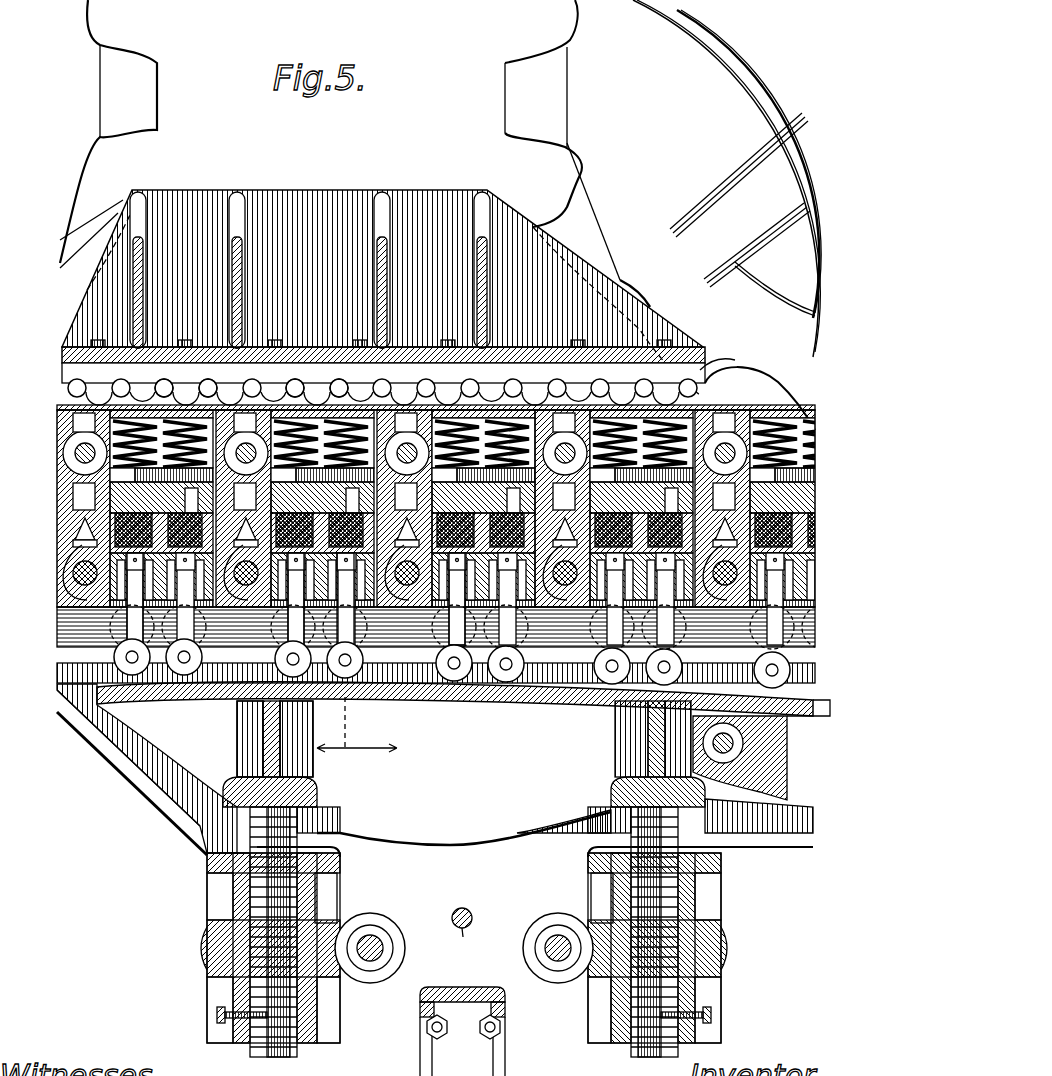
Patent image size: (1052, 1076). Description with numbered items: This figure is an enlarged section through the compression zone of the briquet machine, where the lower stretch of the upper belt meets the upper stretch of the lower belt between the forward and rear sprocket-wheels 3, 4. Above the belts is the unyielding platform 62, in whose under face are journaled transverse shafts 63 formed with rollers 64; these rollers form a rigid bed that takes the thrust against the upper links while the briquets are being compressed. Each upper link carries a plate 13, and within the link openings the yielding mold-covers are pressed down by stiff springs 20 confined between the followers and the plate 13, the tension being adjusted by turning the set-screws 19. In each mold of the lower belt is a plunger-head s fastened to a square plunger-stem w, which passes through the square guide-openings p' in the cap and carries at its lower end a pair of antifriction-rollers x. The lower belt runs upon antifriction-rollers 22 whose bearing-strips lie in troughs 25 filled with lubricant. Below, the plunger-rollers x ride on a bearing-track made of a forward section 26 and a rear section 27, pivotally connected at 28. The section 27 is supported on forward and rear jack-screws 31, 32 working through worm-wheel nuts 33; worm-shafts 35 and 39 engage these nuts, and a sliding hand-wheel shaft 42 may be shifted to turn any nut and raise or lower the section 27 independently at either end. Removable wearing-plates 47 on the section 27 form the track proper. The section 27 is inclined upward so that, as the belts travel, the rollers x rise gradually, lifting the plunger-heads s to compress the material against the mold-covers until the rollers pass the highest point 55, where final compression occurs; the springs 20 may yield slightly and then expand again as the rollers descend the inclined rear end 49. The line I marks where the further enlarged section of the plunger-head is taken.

The forward sprocket-wheel 3 is at (550, 67).
The rear sprocket-wheel 4 is at (125, 62).
The plate 13 is at (710, 416).
The set-screw 19 is at (515, 404).
The stiff spring 20 is at (250, 402).
The antifriction-rollers 22 is at (585, 612).
The troughs 25 is at (378, 705).
The forward track section 26 is at (800, 716).
The rear track section 27 is at (493, 704).
The pivotal connection 28 is at (725, 755).
The forward jack-screw 31 is at (630, 823).
The rear jack-screw 32 is at (313, 833).
The worm-wheel nuts 33 is at (213, 950).
The worm-shaft 35 is at (558, 938).
The worm-shaft 39 is at (372, 937).
The sliding shaft 42 is at (462, 938).
The wearing-plates 47 is at (567, 686).
The downward-inclined rear end 49 is at (160, 697).
The highest point 55 is at (245, 702).
The unyielding platform 62 is at (383, 276).
The transverse shafts 63 is at (207, 382).
The rollers 64 is at (339, 382).
The antifriction-rollers x is at (143, 615).
The plunger-head s is at (295, 599).
The square guide-openings p' is at (374, 599).
The square plunger-stem w is at (462, 615).
The section line I is at (357, 740).